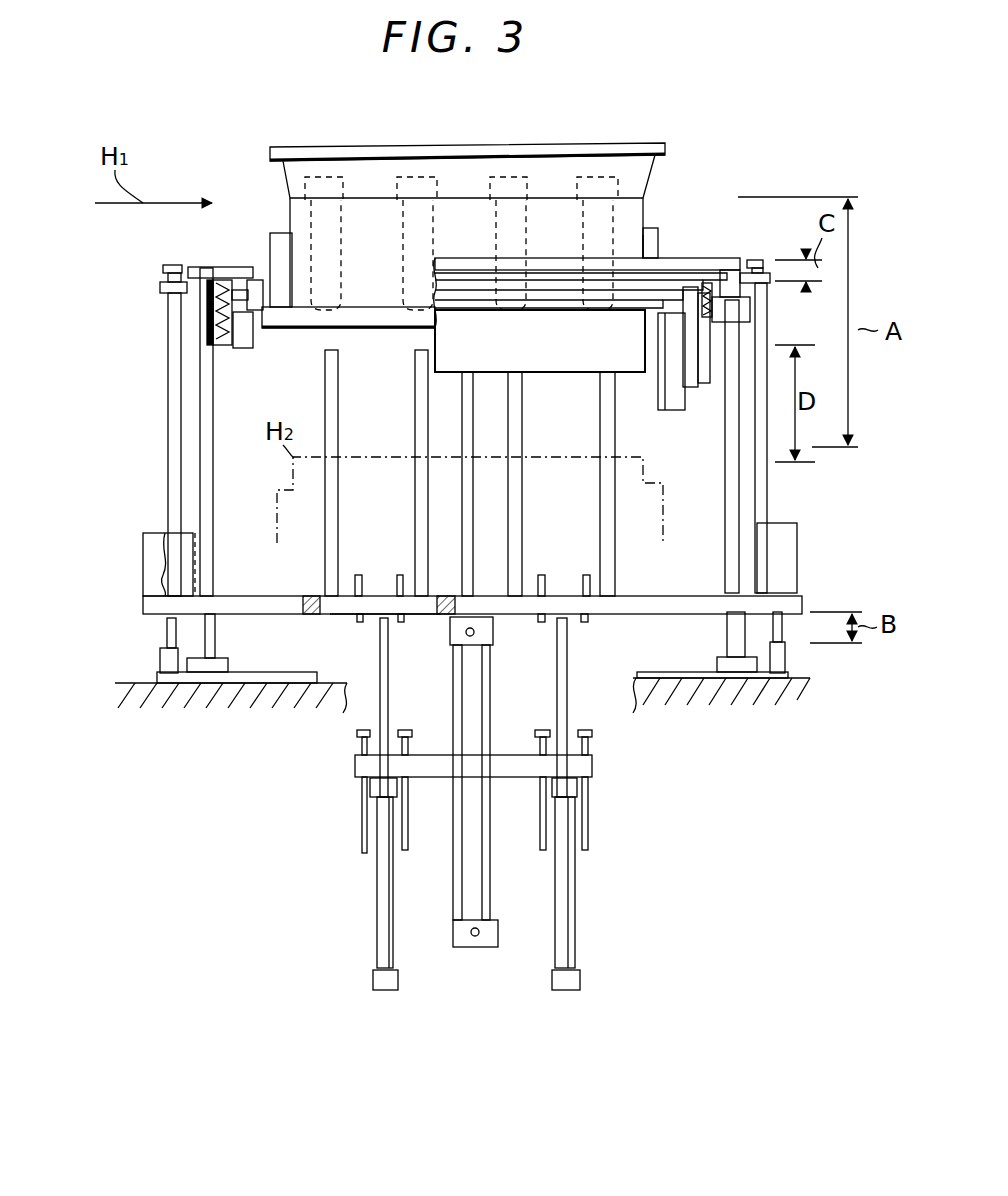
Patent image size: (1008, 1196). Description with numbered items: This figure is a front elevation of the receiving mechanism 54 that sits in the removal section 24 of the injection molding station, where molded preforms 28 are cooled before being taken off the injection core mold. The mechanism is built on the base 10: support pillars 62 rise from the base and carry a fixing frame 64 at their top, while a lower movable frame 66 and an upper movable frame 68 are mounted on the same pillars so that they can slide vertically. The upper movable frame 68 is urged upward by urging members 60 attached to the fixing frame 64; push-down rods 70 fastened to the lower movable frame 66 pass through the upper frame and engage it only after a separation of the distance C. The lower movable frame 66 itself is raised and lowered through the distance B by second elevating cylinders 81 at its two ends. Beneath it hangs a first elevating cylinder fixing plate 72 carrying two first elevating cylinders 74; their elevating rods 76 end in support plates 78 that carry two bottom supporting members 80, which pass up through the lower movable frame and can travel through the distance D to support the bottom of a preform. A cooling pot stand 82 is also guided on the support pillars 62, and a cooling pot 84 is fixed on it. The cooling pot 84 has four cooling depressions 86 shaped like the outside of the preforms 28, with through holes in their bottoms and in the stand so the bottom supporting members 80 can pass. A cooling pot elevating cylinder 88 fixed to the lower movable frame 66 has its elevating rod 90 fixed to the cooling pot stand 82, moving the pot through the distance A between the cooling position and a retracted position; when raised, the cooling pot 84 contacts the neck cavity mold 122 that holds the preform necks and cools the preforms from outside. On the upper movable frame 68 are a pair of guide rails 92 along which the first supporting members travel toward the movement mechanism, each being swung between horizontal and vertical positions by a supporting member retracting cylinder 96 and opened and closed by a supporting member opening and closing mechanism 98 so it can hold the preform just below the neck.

The base 10 is at (805, 685).
The removal section 24 is at (255, 150).
The preform 28 is at (645, 212).
The receiving mechanism 54 is at (742, 175).
The urging member 60 is at (250, 348).
The support pillar 62 is at (213, 480).
The fixing frame 64 is at (212, 265).
The lower movable frame 66 is at (653, 598).
The upper movable frame 68 is at (705, 262).
The push-down rod 70 is at (165, 372).
The first elevating cylinder fixing plate 72 is at (597, 762).
The first elevating cylinder 74 is at (378, 912).
The elevating rod 76 is at (388, 692).
The support plate 78 is at (348, 618).
The bottom supporting member 80 is at (417, 414).
The second elevating cylinder 81 is at (148, 553).
The cooling pot stand 82 is at (292, 310).
The cooling pot 84 is at (660, 245).
The cooling depression 86 is at (525, 207).
The cooling pot elevating cylinder 88 is at (470, 902).
The elevating rod 90 is at (473, 523).
The guide rail 92 is at (253, 278).
The supporting member retracting cylinder 96 is at (670, 403).
The supporting member opening and closing mechanism 98 is at (440, 330).
The neck cavity mold 122 is at (657, 150).